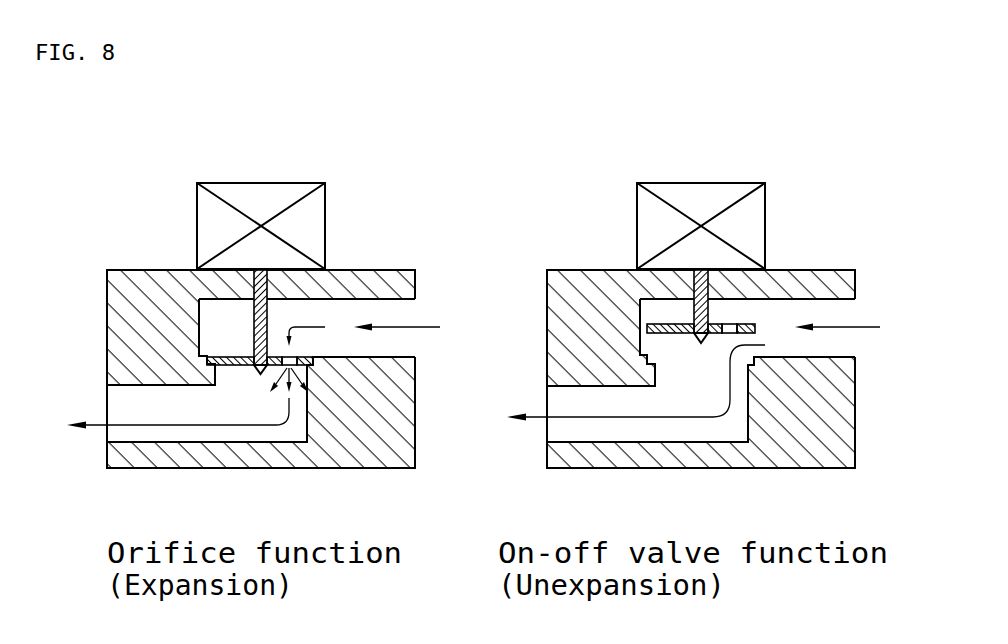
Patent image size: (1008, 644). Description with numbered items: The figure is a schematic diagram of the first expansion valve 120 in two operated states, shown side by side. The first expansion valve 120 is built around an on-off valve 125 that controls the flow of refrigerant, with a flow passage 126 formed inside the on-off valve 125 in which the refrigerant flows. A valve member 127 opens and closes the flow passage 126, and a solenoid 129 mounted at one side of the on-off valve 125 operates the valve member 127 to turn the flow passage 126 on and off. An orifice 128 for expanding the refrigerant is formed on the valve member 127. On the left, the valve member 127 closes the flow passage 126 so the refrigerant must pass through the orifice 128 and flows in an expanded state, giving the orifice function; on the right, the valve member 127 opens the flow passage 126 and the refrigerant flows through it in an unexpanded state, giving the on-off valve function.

The first expansion valve 120 is at (106, 231).
The on-off valve 125 is at (140, 313).
The flow passage 126 is at (190, 402).
The valve member 127 is at (232, 357).
The orifice 128 is at (292, 357).
The solenoid 129 is at (257, 183).